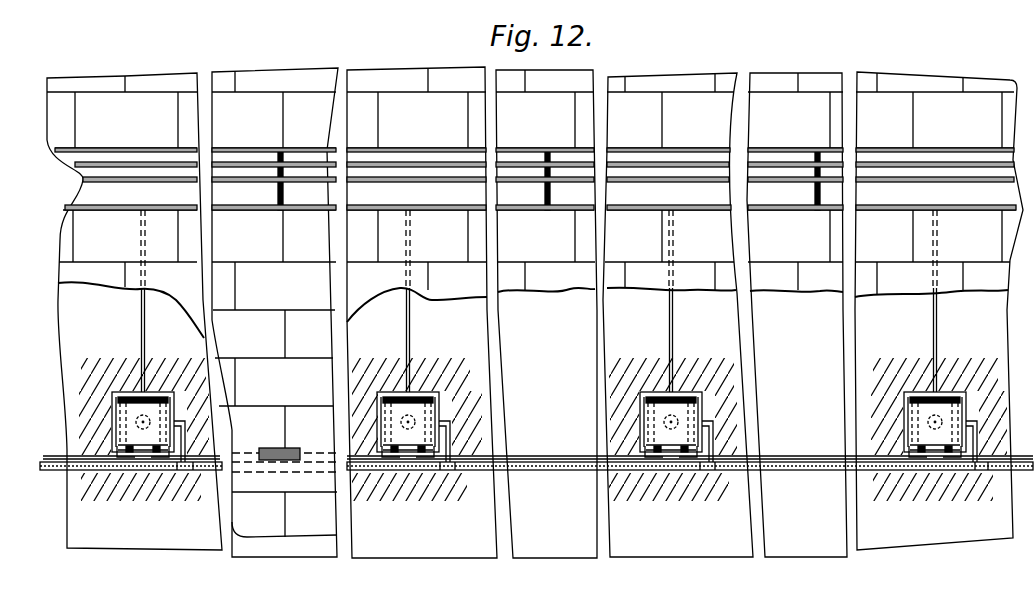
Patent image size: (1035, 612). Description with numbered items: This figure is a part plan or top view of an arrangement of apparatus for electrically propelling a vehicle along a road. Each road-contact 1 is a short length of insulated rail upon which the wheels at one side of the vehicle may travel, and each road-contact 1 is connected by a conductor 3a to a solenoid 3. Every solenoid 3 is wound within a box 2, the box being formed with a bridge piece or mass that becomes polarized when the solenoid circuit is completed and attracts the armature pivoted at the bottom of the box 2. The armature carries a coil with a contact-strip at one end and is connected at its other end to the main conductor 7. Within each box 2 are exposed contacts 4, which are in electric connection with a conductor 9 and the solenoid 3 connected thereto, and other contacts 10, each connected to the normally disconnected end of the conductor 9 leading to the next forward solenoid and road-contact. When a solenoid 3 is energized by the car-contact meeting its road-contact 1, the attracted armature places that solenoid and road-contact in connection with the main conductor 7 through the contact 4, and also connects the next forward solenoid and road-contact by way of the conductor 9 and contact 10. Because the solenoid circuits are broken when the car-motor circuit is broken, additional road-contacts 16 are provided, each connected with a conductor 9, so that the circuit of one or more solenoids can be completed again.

The road-contact 1 is at (535, 179).
The conductor 3a is at (527, 301).
The box 2 is at (550, 419).
The solenoid 3 is at (539, 379).
The contact 4 is at (540, 486).
The contact 10 is at (535, 482).
The conductor 9 is at (58, 456).
The main conductor 7 is at (48, 471).
The additional road-contact 16 is at (276, 450).